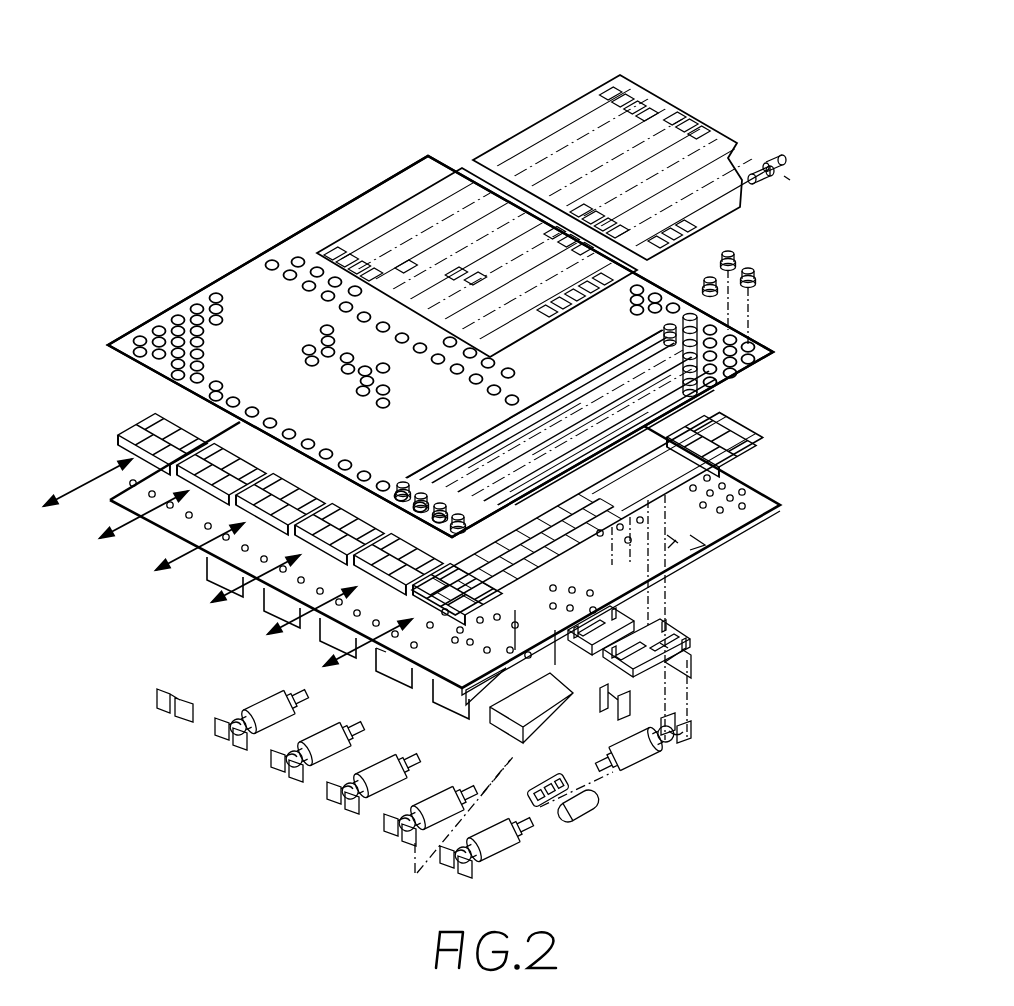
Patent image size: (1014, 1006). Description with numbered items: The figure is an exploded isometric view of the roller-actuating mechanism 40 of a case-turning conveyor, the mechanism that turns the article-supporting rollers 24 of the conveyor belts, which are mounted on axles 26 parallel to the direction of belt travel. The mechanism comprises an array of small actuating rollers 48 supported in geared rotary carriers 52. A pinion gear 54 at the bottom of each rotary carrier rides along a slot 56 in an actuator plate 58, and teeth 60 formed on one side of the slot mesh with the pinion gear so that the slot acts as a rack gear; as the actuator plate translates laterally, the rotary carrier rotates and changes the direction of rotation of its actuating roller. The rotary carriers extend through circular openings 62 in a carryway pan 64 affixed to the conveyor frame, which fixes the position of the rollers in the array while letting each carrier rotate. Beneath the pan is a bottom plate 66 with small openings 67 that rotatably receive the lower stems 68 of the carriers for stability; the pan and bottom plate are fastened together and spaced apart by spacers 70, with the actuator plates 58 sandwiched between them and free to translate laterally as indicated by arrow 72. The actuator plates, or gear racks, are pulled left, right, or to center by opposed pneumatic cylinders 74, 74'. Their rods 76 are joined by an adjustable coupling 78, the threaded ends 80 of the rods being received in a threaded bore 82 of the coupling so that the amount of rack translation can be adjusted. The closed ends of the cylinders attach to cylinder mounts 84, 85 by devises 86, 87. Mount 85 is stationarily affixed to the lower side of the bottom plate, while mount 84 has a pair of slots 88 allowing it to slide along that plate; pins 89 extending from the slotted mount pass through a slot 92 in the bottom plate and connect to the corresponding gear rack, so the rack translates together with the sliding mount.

The roller-actuating mechanism 40 is at (305, 86).
The article-supporting rollers 24 is at (787, 167).
The axles 26 is at (786, 178).
The circular openings 62 is at (262, 262).
The carryway pan 64 is at (360, 203).
The actuating rollers 48 is at (750, 272).
The geared rotary carriers 52 is at (755, 279).
The pinion gear 54 is at (754, 284).
The lower stems 68 is at (753, 290).
The slot 56 is at (728, 422).
The actuator plate 58 is at (153, 420).
The teeth 60 is at (746, 440).
The bottom plate 66 is at (740, 525).
The small openings 67 is at (762, 497).
The spacers 70 is at (703, 538).
The slot 92 is at (673, 543).
The pins 89 is at (665, 645).
The slots 88 is at (687, 652).
The cylinder mount 84 is at (693, 669).
The cylinder mount 85 is at (500, 724).
The devises 86 is at (620, 706).
The threaded bore 82 is at (560, 792).
The adjustable coupling 78 is at (582, 808).
The rods 76 is at (520, 818).
The threaded ends 80 is at (297, 687).
The devises 87 is at (282, 760).
The pneumatic cylinder 74 is at (654, 764).
The pneumatic cylinder 74' is at (491, 852).
The arrow 72 is at (348, 652).